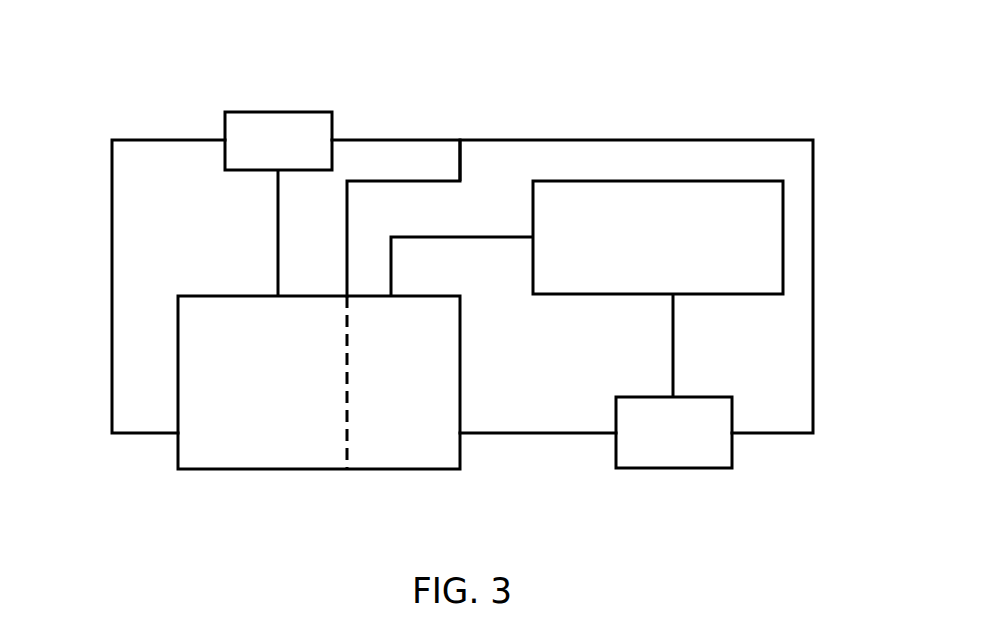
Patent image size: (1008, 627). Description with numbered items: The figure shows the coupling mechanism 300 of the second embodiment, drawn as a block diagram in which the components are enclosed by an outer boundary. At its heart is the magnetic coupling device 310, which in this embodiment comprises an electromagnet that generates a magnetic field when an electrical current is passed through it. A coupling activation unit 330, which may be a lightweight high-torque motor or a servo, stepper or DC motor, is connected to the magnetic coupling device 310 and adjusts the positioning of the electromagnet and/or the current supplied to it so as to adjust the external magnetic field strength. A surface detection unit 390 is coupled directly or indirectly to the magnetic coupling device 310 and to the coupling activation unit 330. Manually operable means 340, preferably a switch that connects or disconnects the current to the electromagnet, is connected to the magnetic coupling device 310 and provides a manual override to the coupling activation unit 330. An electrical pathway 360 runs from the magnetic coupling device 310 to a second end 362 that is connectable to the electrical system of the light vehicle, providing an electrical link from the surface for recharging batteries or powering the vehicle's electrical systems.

The coupling mechanism 300 is at (758, 130).
The magnetic coupling device 310 is at (192, 383).
The coupling activation unit 330 is at (770, 238).
The manually operable means 340 is at (277, 112).
The electrical pathway 360 is at (392, 181).
The second end of the electrical pathway 362 is at (460, 140).
The surface detection unit 390 is at (673, 462).